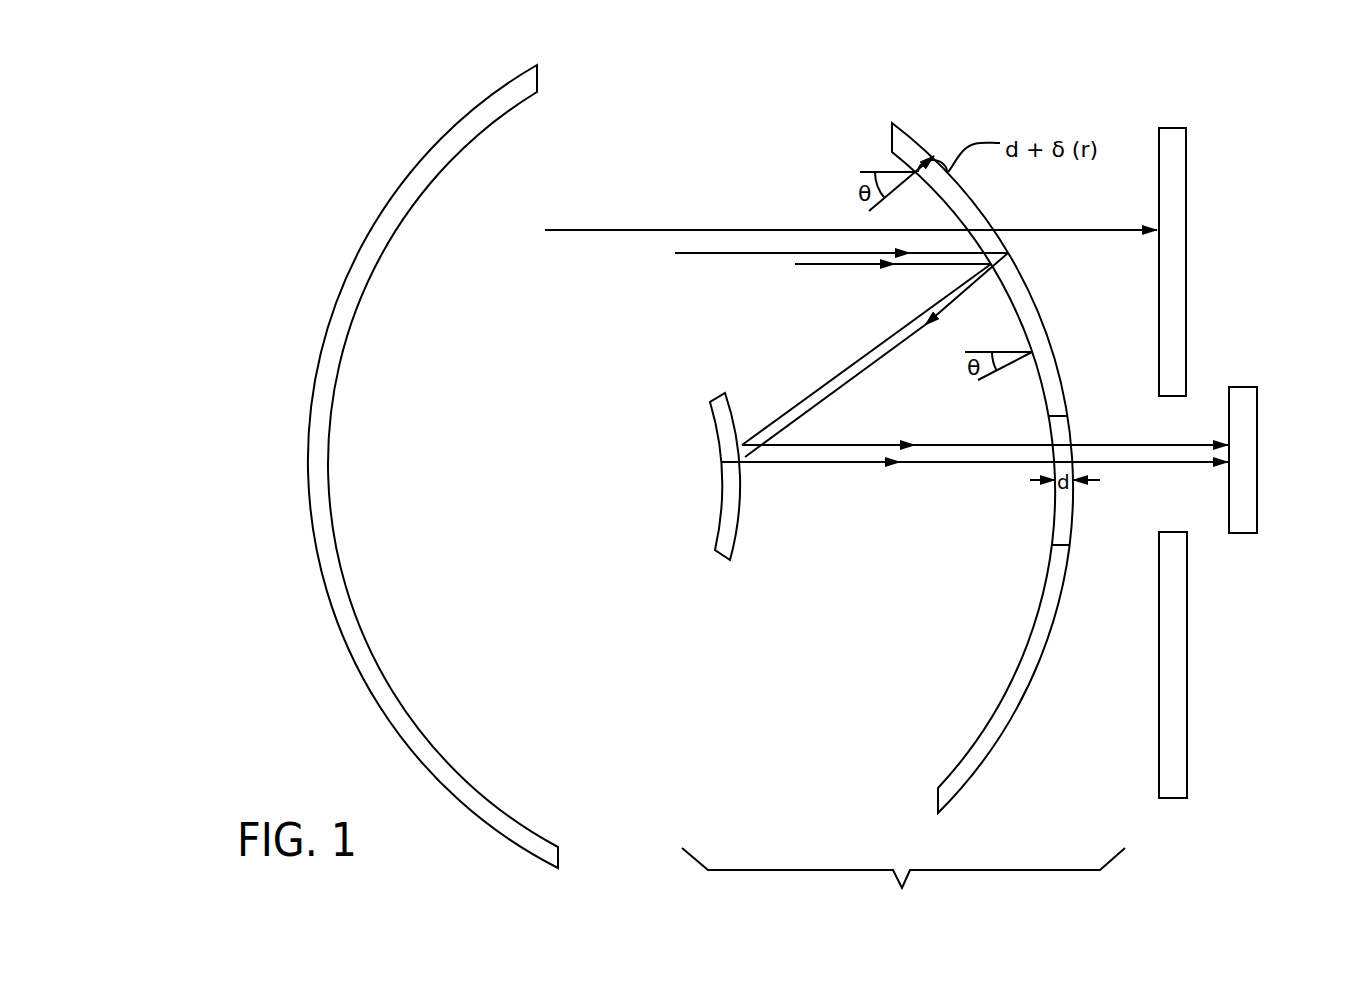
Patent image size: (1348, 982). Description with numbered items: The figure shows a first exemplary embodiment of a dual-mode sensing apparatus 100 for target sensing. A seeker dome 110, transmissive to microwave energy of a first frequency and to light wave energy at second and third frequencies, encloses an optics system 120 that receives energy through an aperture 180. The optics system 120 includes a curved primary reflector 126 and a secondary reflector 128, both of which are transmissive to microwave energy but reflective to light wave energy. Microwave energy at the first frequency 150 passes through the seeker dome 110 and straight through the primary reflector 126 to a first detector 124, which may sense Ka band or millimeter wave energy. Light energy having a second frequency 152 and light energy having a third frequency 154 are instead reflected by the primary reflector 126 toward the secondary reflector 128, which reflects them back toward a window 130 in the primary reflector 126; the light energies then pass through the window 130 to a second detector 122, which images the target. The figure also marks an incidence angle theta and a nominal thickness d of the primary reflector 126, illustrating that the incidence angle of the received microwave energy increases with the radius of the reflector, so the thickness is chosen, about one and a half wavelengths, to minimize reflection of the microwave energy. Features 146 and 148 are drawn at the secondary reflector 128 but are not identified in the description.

The dual-mode sensing apparatus 100 is at (257, 181).
The seeker dome 110 is at (503, 88).
The optics system 120 is at (903, 884).
The second detector 122 is at (1252, 512).
The first detector 124 is at (1184, 179).
The primary reflector 126 is at (1010, 715).
The secondary reflector 128 is at (732, 537).
The window 130 is at (1075, 522).
The lens surface 146 is at (735, 417).
The lens element 148 is at (716, 440).
The microwave energy at a first frequency 150 is at (601, 228).
The light energy having a second frequency 152 is at (839, 268).
The light energy having a third frequency 154 is at (727, 257).
The aperture 180 is at (262, 523).